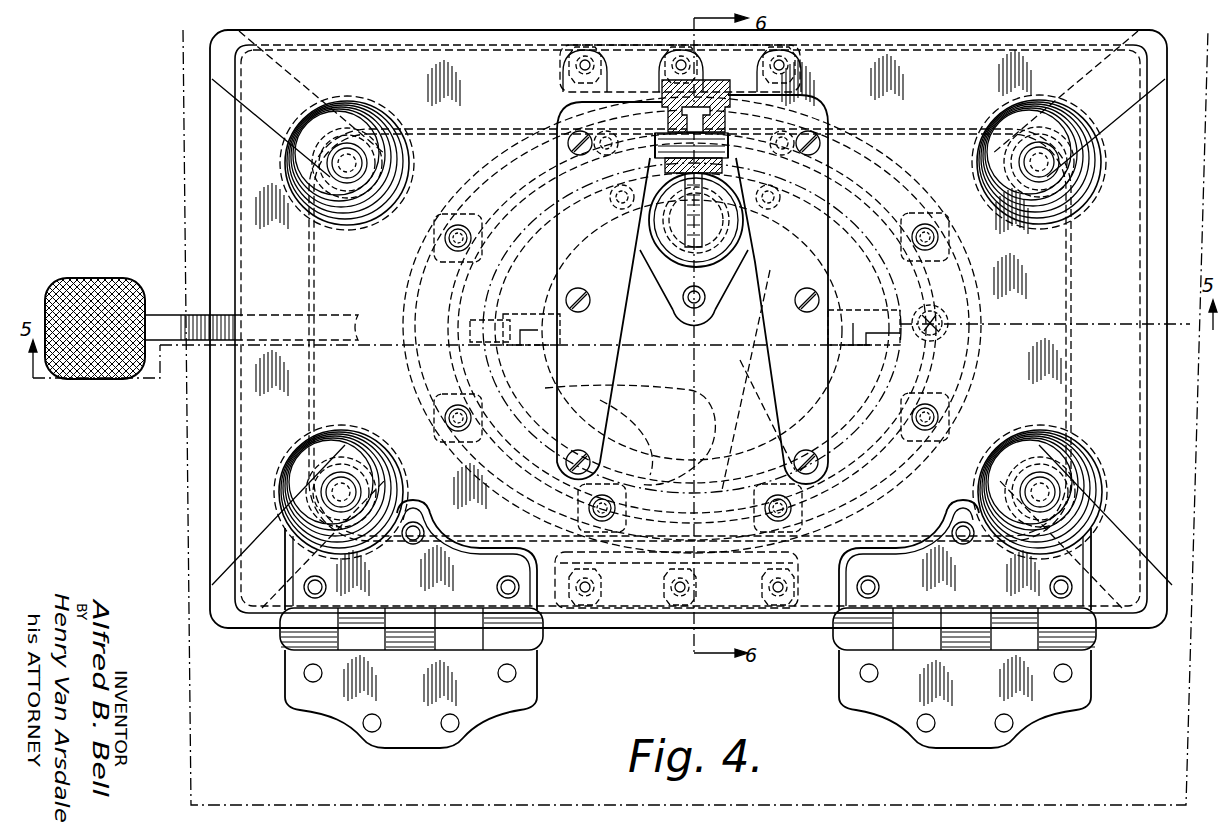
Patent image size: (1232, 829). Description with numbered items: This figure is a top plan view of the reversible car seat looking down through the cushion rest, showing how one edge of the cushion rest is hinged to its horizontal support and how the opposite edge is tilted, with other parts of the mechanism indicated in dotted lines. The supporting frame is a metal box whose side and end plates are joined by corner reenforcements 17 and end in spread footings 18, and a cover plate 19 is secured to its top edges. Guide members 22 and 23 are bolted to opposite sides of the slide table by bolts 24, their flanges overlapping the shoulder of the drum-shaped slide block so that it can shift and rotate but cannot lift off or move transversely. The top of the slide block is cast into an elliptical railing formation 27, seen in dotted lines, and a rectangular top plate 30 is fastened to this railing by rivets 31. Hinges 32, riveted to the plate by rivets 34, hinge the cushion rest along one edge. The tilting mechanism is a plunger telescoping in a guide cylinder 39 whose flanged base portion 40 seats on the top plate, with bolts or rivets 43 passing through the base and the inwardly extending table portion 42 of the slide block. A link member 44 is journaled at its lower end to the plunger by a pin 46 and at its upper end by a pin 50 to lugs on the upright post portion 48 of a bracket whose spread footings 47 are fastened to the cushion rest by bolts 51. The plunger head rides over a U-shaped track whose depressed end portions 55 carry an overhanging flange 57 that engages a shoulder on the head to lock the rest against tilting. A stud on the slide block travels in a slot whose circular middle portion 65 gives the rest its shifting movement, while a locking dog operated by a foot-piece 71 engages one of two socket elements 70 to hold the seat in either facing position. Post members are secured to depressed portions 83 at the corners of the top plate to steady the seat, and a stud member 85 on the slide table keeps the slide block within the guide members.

The corner reenforcements 17 is at (235, 44).
The spread footings 18 is at (1190, 356).
The cover plate 19 is at (1072, 284).
The guide member 22 is at (782, 576).
The guide member 23 is at (575, 93).
The bolts 24 is at (587, 618).
The railing formation 27 is at (415, 300).
The top plate 30 is at (244, 252).
The rivets 31 is at (545, 162).
The hinges 32 is at (325, 705).
The rivets 34 is at (308, 589).
The guide cylinder 39 is at (730, 222).
The flanged base portion 40 is at (722, 304).
The table portion 42 is at (590, 302).
The bolts or rivets 43 is at (684, 310).
The link member 44 is at (684, 212).
The pin 46 is at (686, 293).
The spread footings 47 is at (810, 114).
The upright post portion 48 is at (663, 92).
The pin 50 is at (732, 145).
The bolts 51 is at (570, 133).
The end portions of the U-shaped track 55 is at (667, 397).
The overhanging flange 57 is at (753, 392).
The middle portion of the slot 65 is at (757, 380).
The socket elements 70 is at (537, 318).
The foot-piece 71 is at (163, 322).
The depressed portions 83 is at (362, 208).
The stud member 85 is at (927, 307).